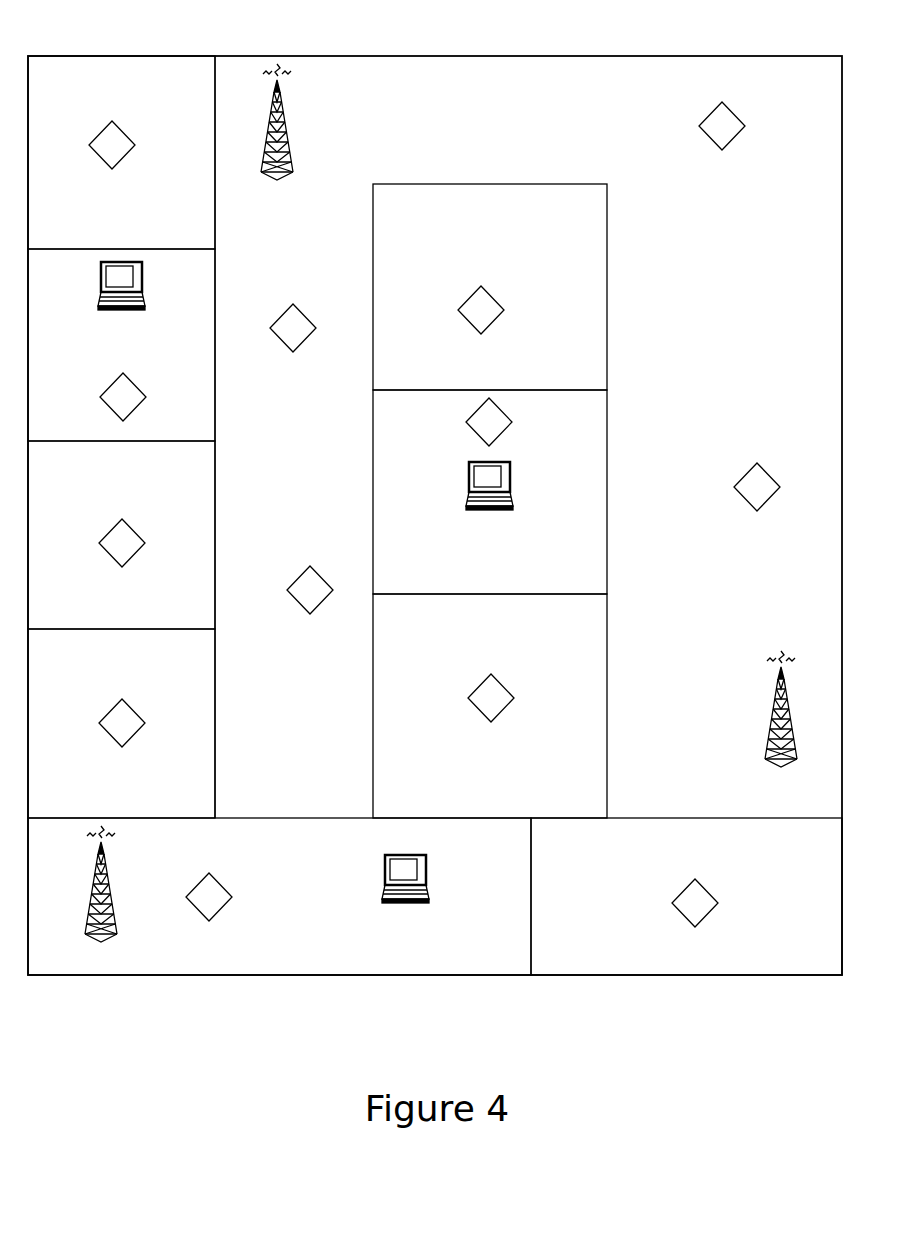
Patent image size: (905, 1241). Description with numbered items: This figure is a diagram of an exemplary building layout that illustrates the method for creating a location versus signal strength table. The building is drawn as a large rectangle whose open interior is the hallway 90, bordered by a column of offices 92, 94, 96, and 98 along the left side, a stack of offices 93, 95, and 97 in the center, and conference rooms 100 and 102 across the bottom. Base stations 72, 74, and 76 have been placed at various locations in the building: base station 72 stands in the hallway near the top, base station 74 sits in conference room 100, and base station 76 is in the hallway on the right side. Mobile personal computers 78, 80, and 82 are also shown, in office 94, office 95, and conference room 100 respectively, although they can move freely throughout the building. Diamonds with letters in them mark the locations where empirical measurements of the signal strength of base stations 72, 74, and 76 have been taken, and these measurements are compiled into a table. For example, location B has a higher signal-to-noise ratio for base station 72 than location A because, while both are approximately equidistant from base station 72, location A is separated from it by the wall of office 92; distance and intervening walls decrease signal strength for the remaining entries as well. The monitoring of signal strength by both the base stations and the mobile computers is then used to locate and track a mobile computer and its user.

The hallway 90 is at (773, 95).
The office 92 is at (150, 88).
The office 93 is at (567, 217).
The office 94 is at (183, 295).
The office 95 is at (568, 432).
The office 96 is at (183, 488).
The office 97 is at (573, 655).
The office 98 is at (177, 677).
The conference room 100 is at (218, 836).
The conference room 102 is at (620, 830).
The base station 72 is at (308, 148).
The base station 74 is at (80, 915).
The base station 76 is at (765, 687).
The mobile personal computer 78 is at (90, 298).
The mobile personal computer 80 is at (467, 462).
The mobile personal computer 82 is at (382, 872).